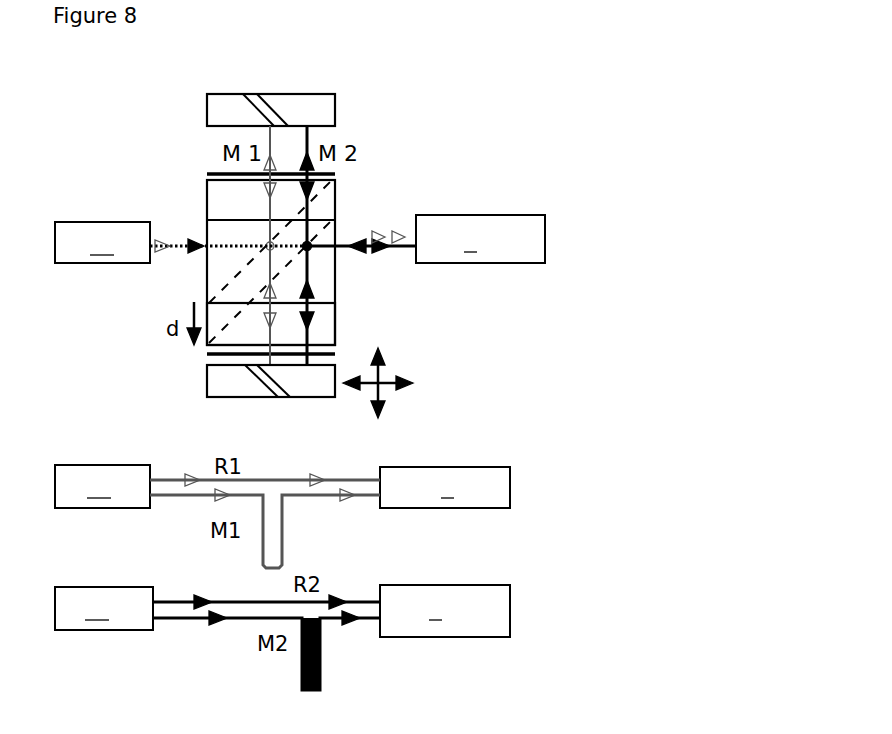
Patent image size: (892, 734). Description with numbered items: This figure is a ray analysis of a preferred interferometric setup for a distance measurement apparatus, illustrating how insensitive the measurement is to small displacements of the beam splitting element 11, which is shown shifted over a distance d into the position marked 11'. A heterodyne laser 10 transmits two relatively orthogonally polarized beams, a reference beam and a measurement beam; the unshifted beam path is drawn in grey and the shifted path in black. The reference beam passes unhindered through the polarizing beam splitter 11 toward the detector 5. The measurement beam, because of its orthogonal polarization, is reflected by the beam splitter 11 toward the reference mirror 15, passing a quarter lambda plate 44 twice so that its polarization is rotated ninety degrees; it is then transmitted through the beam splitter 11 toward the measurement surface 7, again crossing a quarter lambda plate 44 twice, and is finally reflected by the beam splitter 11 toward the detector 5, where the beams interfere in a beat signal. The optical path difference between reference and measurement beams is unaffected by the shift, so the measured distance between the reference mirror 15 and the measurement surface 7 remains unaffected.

The detector 5 is at (462, 426).
The measurement surface 7 is at (288, 382).
The heterodyne laser 10 is at (104, 426).
The beam splitting element 11 is at (338, 253).
The beam splitter crystal part 11' is at (346, 317).
The reference mirror 15 is at (315, 107).
The quarter lambda plate 44 is at (210, 173).